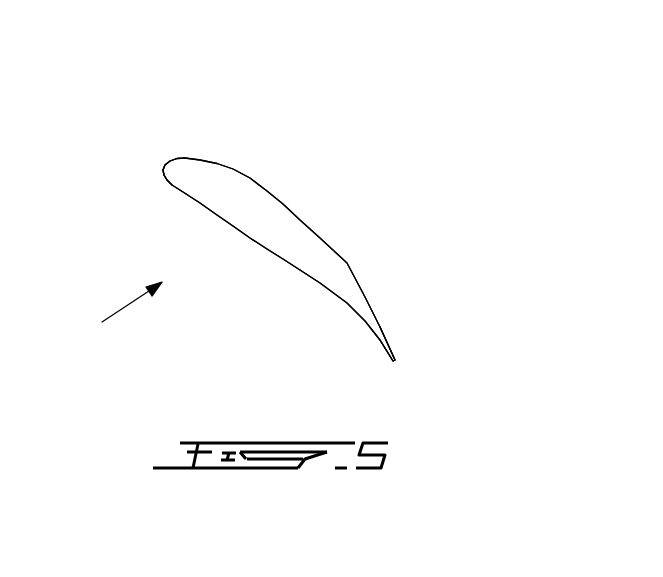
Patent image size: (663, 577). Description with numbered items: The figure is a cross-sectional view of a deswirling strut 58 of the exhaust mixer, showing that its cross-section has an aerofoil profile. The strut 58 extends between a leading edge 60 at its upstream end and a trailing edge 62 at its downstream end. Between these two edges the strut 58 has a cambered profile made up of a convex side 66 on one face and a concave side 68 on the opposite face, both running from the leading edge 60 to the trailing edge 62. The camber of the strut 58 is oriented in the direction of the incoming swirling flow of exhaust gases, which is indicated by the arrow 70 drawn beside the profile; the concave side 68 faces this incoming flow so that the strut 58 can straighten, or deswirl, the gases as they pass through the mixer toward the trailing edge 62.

The deswirling strut 58 is at (305, 245).
The leading edge 60 is at (165, 167).
The trailing edge 62 is at (393, 361).
The convex side 66 is at (257, 185).
The concave side 68 is at (283, 258).
The arrow 70 is at (125, 308).